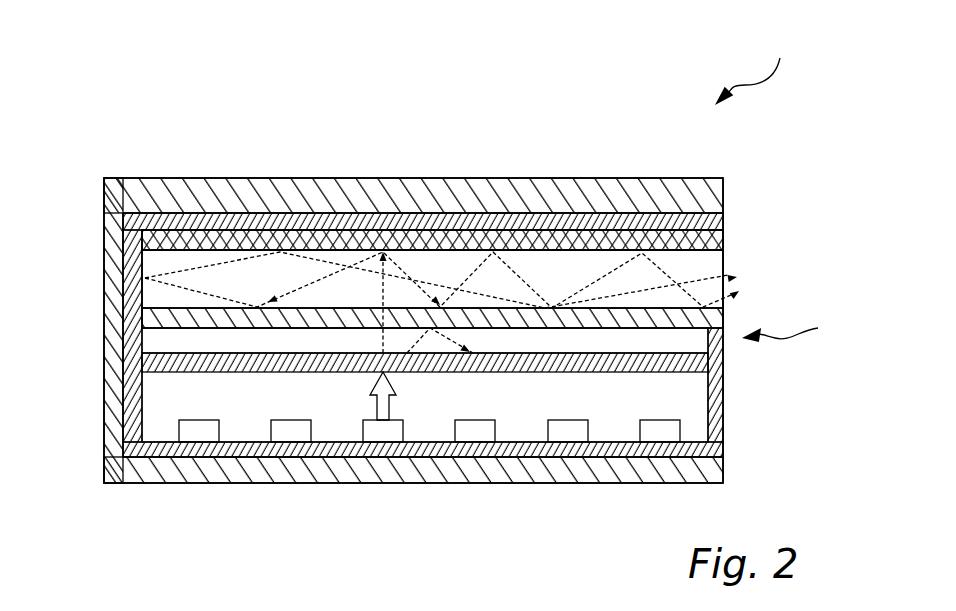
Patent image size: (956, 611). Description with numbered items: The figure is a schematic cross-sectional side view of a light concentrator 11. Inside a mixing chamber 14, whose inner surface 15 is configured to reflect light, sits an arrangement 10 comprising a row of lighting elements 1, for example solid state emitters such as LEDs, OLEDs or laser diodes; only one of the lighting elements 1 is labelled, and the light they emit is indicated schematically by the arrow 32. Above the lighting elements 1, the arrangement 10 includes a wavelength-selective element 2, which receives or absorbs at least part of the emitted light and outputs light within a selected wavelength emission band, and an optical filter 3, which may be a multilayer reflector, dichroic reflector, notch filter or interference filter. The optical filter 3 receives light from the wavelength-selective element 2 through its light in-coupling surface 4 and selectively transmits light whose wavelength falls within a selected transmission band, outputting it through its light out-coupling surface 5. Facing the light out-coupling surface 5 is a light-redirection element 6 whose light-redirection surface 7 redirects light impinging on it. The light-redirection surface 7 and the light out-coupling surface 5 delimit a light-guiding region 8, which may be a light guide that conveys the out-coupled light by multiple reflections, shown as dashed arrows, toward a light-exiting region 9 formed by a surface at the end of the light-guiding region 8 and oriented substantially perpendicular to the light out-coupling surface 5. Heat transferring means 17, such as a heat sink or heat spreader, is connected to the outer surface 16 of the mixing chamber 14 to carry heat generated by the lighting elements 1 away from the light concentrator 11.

The lighting elements 1 is at (197, 420).
The wavelength-selective element 2 is at (695, 362).
The optical filter 3 is at (160, 320).
The light in-coupling surface 4 is at (177, 328).
The light out-coupling surface 5 is at (165, 320).
The light-redirection element 6 is at (205, 238).
The light-redirection surface 7 is at (165, 253).
The light-guiding region 8 is at (563, 275).
The light-exiting region 9 is at (723, 262).
The arrangement 10 is at (795, 323).
The light concentrator 11 is at (454, 256).
The mixing chamber 14 is at (722, 425).
The inner surface 15 is at (707, 400).
The outer surface 16 is at (481, 455).
The heat transferring means 17 is at (400, 195).
The light emitted by the lighting elements 32 is at (389, 400).